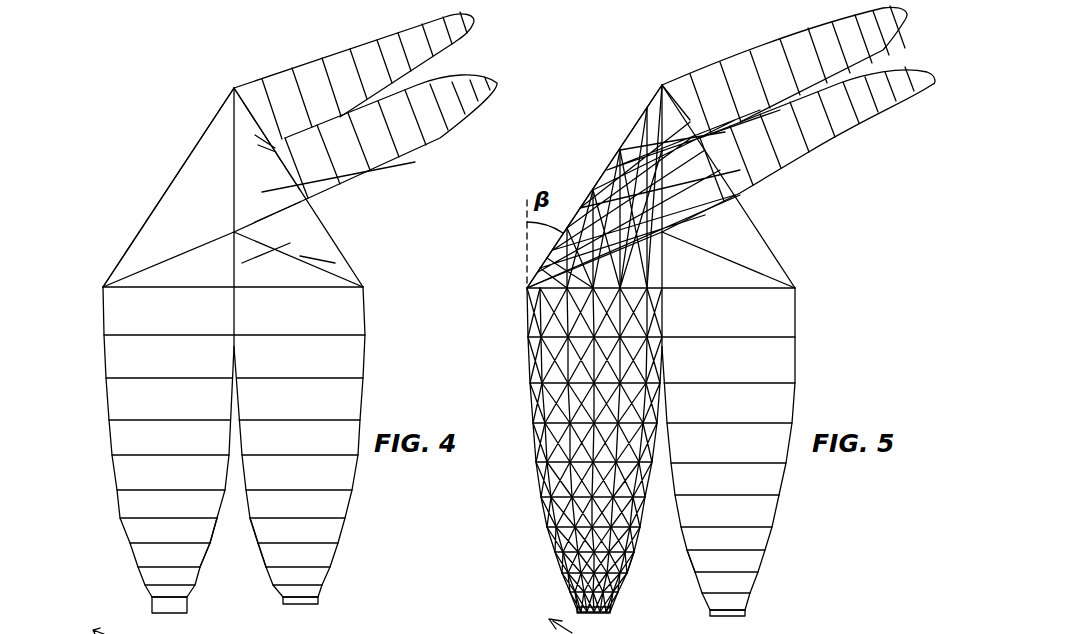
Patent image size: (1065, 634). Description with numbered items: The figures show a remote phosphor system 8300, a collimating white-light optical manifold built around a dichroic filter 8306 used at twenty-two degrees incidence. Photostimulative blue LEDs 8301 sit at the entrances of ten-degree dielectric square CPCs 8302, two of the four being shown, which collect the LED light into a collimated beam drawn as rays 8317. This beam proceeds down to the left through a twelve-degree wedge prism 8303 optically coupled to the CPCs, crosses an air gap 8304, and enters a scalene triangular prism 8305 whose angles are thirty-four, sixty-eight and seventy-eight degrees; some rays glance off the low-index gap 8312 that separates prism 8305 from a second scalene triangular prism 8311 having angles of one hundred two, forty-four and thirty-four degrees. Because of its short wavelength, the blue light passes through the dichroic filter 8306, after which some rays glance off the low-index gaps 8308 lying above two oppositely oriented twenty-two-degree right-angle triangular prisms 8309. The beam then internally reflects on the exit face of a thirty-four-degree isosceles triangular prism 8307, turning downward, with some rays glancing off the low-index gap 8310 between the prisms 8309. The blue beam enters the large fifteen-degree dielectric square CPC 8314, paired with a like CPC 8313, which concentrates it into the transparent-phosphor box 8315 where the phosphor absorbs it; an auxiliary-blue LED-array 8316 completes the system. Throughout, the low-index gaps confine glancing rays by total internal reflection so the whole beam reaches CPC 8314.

In FIG. 4, the remote phosphor system 8300 is at (397, 324).
In FIG. 5, the remote phosphor system 8300 is at (848, 229).
In FIG. 4, the photostimulative blue LEDs 8301 is at (495, 82).
In FIG. 5, the photostimulative blue LEDs 8301 is at (935, 74).
In FIG. 4, the 10° dielectric square CPCs 8302 is at (268, 110).
In FIG. 5, the 10° dielectric square CPCs 8302 is at (718, 95).
In FIG. 4, the 12° wedge prism 8303 is at (267, 146).
In FIG. 4, the air gap 8304 is at (267, 147).
In FIG. 4, the scalene triangular prism 8305 is at (372, 176).
In FIG. 4, the dichroic filter 8306 is at (232, 192).
In FIG. 4, the 34° isosceles triangular prism 8307 is at (187, 203).
In FIG. 5, the 34° isosceles triangular prism 8307 is at (608, 155).
In FIG. 4, the low-index gaps 8308 is at (190, 250).
In FIG. 4, the 22° right-angle triangular prisms 8309 is at (177, 275).
In FIG. 4, the low-index gap 8310 is at (290, 243).
In FIG. 4, the scalene triangular prism 8311 is at (335, 263).
In FIG. 4, the low-index gap 8312 is at (275, 217).
In FIG. 4, the large 15° dielectric square CPC 8313 is at (362, 470).
In FIG. 4, the large 15° dielectric square CPC 8314 is at (218, 525).
In FIG. 5, the large 15° dielectric square CPC 8314 is at (647, 525).
In FIG. 4, the transparent-phosphor box 8315 is at (157, 603).
In FIG. 5, the transparent-phosphor box 8315 is at (573, 611).
In FIG. 4, the auxiliary-blue LED-array 8316 is at (323, 598).
In FIG. 5, the rays 8317 is at (680, 82).